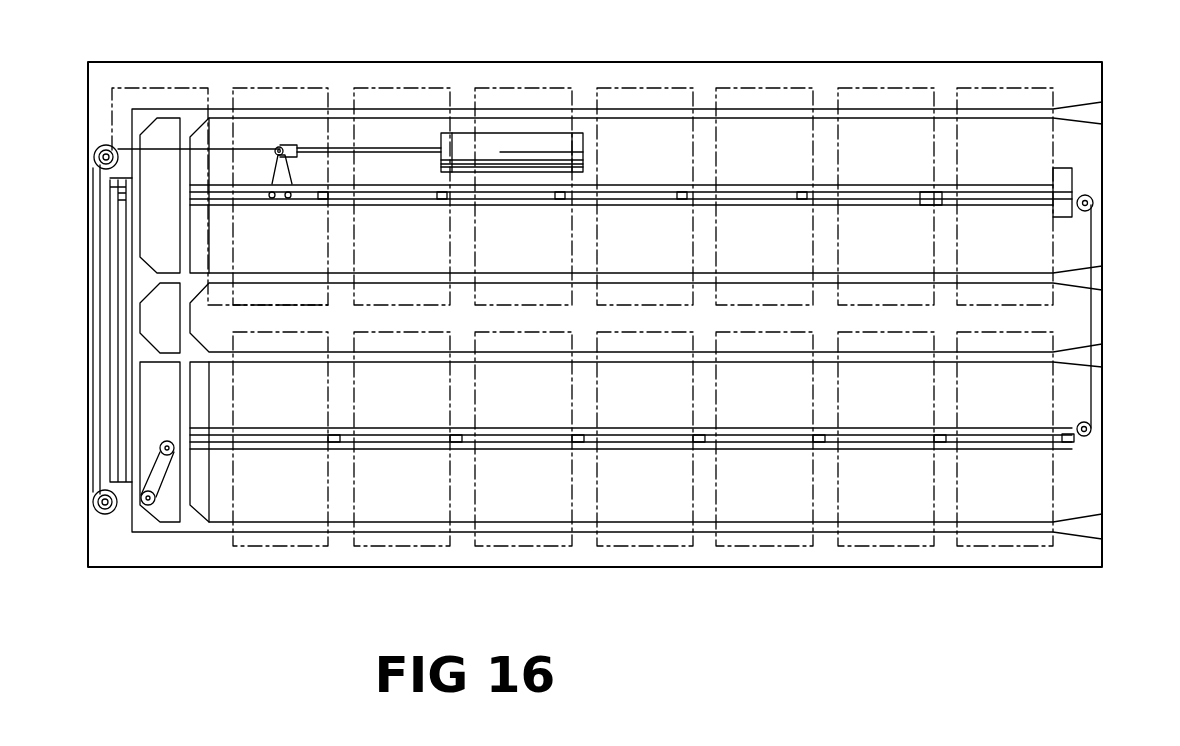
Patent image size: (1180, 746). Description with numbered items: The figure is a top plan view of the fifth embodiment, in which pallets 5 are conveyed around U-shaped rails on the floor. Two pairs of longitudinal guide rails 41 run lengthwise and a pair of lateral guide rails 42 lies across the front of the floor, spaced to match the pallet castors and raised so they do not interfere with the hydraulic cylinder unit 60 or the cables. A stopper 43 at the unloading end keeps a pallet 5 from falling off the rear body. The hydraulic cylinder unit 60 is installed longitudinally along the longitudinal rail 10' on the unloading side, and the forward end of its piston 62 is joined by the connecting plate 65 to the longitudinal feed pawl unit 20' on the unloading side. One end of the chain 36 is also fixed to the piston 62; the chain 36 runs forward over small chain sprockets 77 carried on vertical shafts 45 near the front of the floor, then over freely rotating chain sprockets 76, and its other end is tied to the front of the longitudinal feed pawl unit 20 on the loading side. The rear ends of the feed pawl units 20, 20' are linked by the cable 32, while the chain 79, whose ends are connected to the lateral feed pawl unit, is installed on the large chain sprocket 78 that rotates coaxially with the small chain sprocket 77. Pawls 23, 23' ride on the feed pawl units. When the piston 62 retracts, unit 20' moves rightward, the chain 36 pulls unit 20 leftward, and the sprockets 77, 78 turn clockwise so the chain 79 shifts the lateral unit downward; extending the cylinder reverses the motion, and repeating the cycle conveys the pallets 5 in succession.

The pallet 5 is at (778, 88).
The longitudinal rail 10' is at (621, 166).
The longitudinal feed pawl unit 20 is at (631, 414).
The longitudinal feed pawl unit 20' is at (631, 213).
The lower carriages 23 is at (614, 460).
The upper carriages 23' is at (605, 218).
The cable 32 is at (1102, 312).
The chain 36 is at (240, 148).
The guide rail 41 is at (860, 115).
The guide rail 42 is at (138, 248).
The stopper 43 is at (1067, 173).
The shaft 45 is at (100, 150).
The hydraulic cylinder unit 60 is at (585, 137).
The piston 62 is at (372, 152).
The connecting plate 65 is at (285, 157).
The chain sprocket 76 is at (160, 442).
The small chain sprocket 77 is at (106, 170).
The large chain sprocket 78 is at (93, 153).
The chain 79 is at (93, 242).